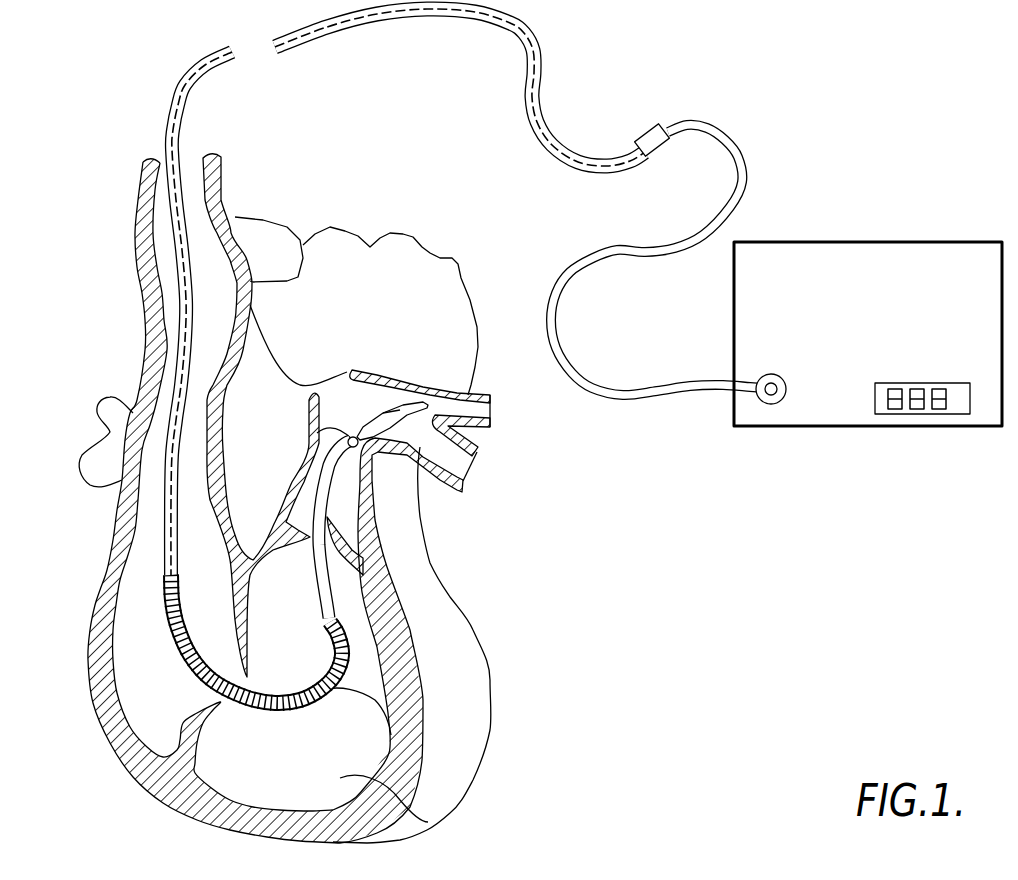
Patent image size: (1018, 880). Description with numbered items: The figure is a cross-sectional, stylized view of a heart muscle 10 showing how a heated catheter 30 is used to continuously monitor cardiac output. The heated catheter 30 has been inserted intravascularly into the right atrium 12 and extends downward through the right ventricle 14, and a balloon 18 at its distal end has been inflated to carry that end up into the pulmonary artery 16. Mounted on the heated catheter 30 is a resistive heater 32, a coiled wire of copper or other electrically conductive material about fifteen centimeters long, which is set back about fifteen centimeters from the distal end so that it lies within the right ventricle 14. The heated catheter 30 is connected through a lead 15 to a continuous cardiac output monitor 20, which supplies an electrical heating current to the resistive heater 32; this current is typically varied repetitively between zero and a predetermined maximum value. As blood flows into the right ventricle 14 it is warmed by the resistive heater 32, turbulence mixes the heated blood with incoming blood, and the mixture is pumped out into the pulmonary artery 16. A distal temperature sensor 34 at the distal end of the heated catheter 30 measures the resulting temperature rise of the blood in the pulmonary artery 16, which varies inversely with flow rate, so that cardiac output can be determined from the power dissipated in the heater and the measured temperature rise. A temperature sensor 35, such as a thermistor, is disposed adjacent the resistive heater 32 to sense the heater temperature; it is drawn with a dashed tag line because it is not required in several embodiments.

The heart muscle 10 is at (565, 539).
The right atrium 12 is at (118, 544).
The right ventricle 14 is at (427, 820).
The lead 15 is at (720, 130).
The pulmonary artery 16 is at (340, 397).
The balloon 18 is at (397, 413).
The continuous cardiac output monitor 20 is at (876, 428).
The heated catheter 30 is at (169, 107).
The resistive heater 32 is at (413, 740).
The distal temperature sensor 34 is at (306, 436).
The temperature sensor 35 is at (260, 710).